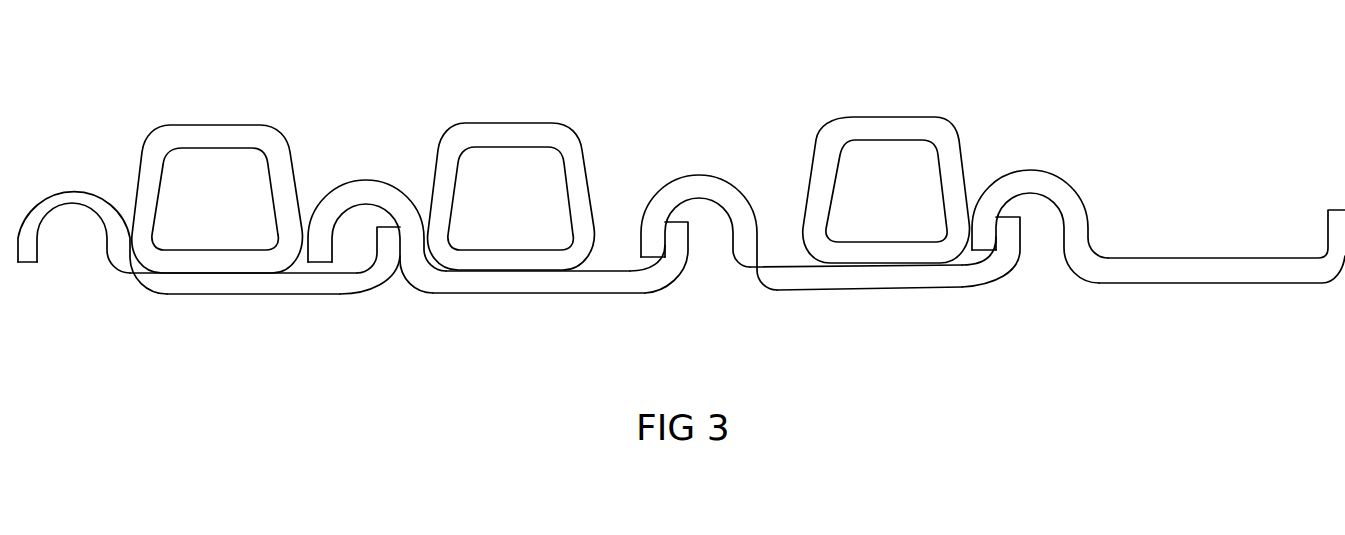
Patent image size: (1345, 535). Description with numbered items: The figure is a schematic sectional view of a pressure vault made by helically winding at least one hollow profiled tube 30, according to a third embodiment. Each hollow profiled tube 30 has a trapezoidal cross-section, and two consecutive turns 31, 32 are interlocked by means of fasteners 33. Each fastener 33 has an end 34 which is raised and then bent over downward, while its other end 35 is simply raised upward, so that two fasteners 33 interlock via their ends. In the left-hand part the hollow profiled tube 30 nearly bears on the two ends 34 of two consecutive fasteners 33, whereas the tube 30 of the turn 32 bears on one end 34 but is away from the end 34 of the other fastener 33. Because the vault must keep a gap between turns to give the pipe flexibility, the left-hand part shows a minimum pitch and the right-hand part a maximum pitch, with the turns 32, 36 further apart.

The hollow profiled tube 30 is at (558, 159).
The turn 31 is at (273, 120).
The turn 32 is at (510, 115).
The fastener 33 is at (255, 285).
The end 34 is at (62, 190).
The end 35 is at (385, 253).
The turn 36 is at (885, 102).